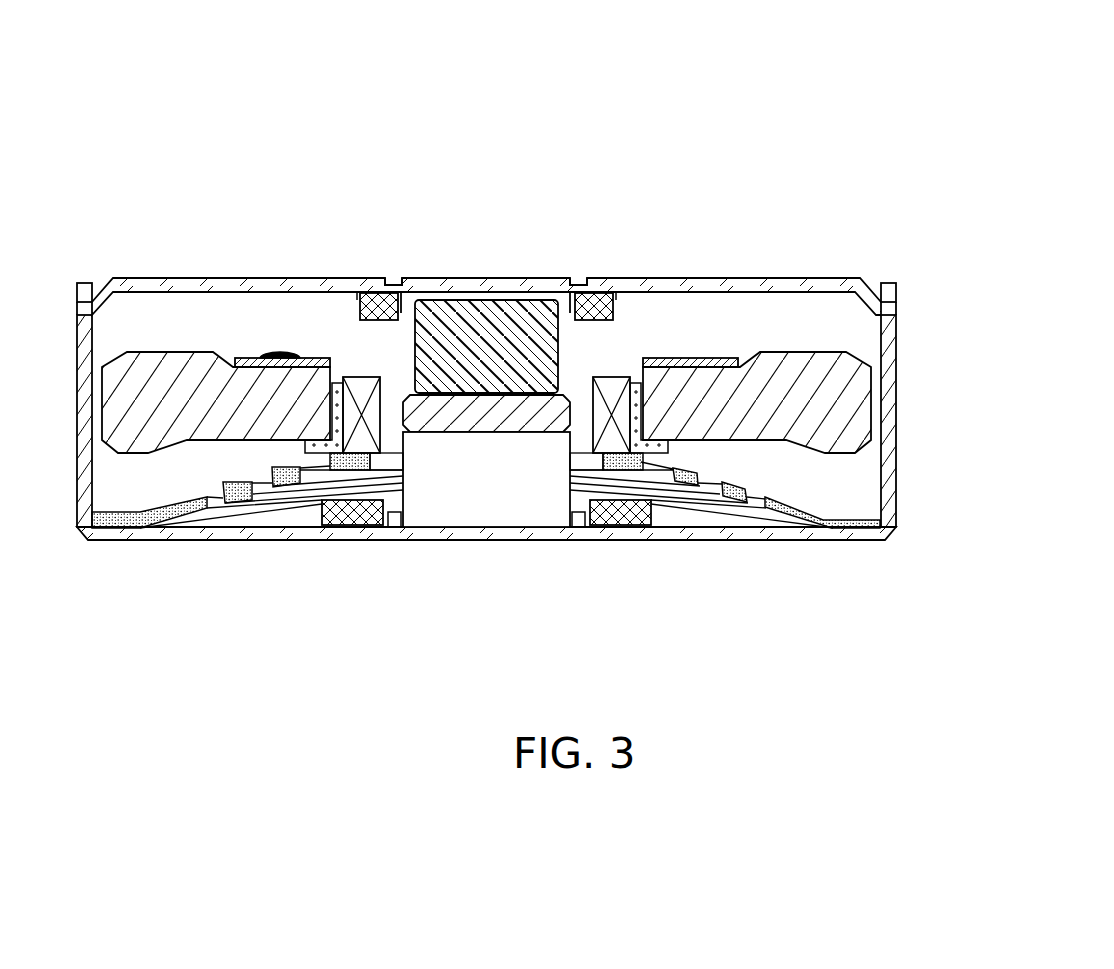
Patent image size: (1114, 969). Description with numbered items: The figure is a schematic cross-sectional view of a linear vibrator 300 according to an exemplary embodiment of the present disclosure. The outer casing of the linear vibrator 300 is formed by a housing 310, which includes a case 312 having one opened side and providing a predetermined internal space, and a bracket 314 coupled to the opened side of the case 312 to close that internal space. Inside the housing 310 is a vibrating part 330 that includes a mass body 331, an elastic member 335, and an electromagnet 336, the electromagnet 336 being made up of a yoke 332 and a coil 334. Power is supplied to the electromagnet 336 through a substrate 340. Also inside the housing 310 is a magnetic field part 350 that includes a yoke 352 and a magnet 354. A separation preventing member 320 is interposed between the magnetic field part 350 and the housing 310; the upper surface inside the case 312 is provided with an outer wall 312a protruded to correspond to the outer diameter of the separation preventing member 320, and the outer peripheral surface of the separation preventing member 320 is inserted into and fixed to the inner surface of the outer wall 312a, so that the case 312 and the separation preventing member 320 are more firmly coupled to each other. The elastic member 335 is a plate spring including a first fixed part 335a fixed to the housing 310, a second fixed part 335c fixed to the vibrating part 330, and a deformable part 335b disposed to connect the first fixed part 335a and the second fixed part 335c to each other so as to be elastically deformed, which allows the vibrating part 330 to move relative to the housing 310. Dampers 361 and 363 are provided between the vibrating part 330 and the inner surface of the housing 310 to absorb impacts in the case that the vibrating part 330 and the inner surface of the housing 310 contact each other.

The linear vibrator 300 is at (212, 68).
The housing 310 is at (210, 183).
The case 312 is at (77, 337).
The outer wall 312a is at (568, 291).
The bracket 314 is at (175, 288).
The separation preventing member 320 is at (473, 317).
The vibrating part 330 is at (1012, 243).
The mass body 331 is at (857, 397).
The yoke 332 is at (633, 395).
The coil 334 is at (625, 380).
The electromagnet 336 is at (917, 215).
The elastic member 335 is at (985, 437).
The first fixed part 335a is at (837, 518).
The deformable part 335b is at (748, 486).
The second fixed part 335c is at (667, 452).
The substrate 340 is at (307, 357).
The magnetic field part 350 is at (550, 610).
The yoke 352 is at (465, 413).
The magnet 354 is at (533, 493).
The damper 361 is at (362, 295).
The damper 363 is at (322, 524).